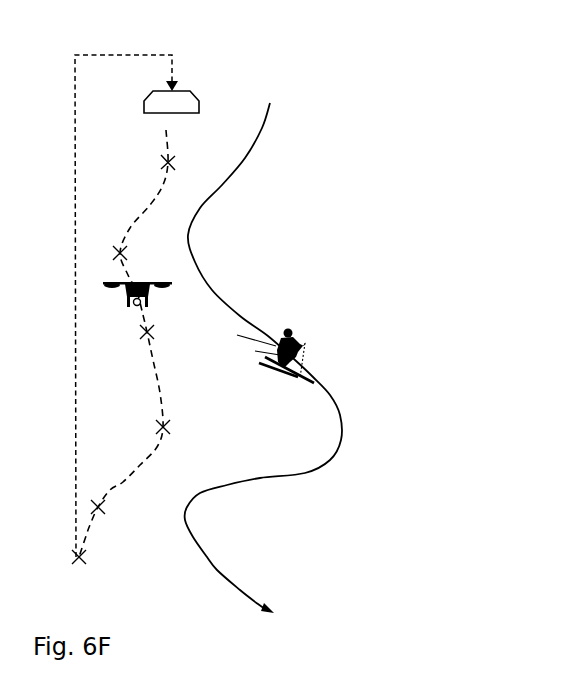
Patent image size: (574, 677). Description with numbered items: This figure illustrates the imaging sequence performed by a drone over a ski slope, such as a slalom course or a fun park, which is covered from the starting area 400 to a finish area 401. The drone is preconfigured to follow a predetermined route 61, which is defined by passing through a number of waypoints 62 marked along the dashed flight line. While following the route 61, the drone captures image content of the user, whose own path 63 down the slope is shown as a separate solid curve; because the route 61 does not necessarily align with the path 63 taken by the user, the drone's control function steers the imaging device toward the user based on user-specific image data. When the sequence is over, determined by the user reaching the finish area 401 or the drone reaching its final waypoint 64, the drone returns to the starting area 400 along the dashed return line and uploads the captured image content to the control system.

The starting area 400 is at (248, 78).
The finish area 401 is at (272, 580).
The route 61 is at (156, 190).
The waypoints 62 is at (179, 421).
The path 63 is at (212, 268).
The final waypoint / return point 64 is at (94, 566).